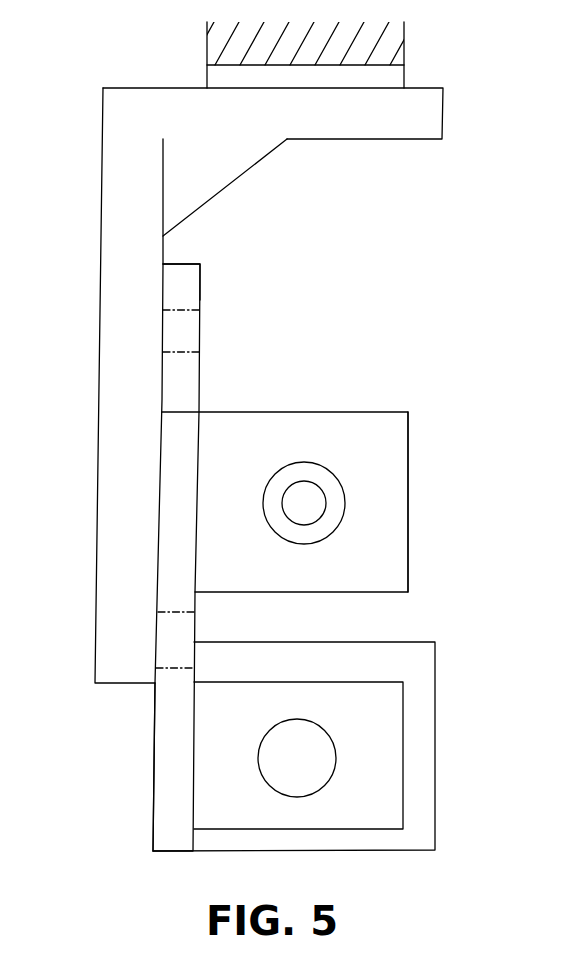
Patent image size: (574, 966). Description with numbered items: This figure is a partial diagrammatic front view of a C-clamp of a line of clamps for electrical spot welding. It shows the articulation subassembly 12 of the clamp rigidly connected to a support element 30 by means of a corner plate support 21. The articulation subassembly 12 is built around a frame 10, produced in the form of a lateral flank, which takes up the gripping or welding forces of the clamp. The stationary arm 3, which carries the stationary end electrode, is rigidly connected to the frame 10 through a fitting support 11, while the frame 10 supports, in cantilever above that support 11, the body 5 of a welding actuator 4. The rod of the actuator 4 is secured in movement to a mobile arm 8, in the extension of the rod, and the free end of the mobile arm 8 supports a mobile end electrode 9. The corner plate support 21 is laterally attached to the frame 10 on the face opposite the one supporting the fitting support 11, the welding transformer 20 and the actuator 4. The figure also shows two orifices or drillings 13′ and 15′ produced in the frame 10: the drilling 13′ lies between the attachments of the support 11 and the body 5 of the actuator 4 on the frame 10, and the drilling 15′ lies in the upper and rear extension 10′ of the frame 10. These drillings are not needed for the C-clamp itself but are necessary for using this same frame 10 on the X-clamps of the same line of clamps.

The stationary arm 3 is at (305, 759).
The welding actuator 4 is at (410, 468).
The body of the welding actuator 5 is at (373, 449).
The mobile arm 8 is at (289, 474).
The mobile end electrode 9 is at (308, 491).
The frame 10 is at (159, 447).
The upper and rear extension of the frame 10′ is at (185, 285).
The fitting support 11 is at (367, 822).
The articulation subassembly 12 is at (143, 703).
The orifice or drilling 13′ is at (155, 625).
The orifice or drilling 15′ is at (195, 329).
The welding transformer 20 is at (434, 702).
The corner plate support 21 is at (137, 177).
The support element 30 is at (406, 47).